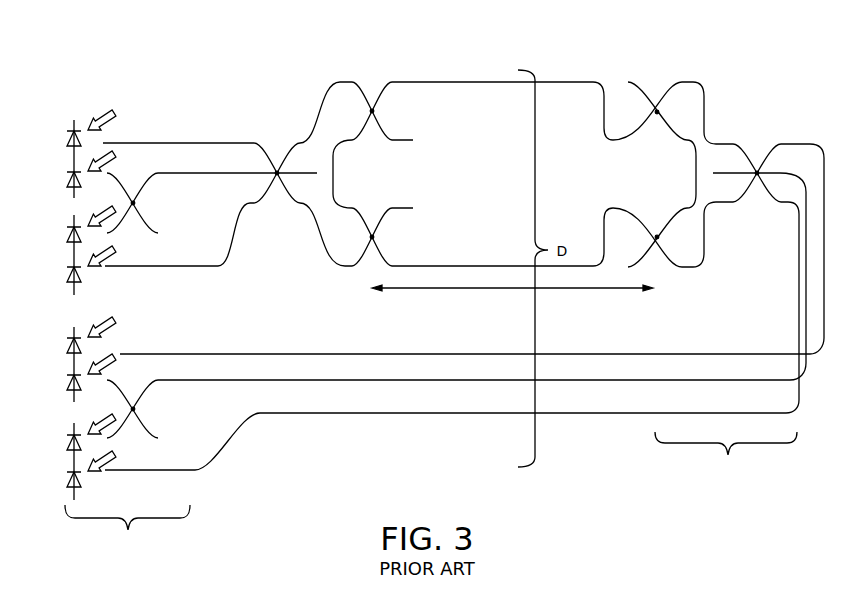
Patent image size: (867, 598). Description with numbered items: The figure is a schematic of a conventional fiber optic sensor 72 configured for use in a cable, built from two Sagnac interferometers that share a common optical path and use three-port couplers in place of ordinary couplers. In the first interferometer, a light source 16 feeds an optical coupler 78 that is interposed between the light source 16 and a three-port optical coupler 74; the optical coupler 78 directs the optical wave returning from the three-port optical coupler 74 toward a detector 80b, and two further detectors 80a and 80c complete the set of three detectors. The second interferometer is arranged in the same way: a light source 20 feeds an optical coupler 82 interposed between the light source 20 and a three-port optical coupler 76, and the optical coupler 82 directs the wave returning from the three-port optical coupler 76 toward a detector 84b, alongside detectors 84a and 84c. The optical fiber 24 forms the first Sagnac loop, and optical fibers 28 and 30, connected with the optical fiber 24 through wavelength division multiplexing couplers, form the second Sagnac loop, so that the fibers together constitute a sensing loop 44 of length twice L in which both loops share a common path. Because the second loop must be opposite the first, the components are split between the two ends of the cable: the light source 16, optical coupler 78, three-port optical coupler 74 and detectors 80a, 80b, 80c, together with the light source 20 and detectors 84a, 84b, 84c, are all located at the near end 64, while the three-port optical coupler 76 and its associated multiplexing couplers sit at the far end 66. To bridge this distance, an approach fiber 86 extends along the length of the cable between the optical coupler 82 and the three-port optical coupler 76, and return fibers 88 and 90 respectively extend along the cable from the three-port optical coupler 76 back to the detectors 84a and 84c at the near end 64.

The fiber optic sensor 72 is at (220, 70).
The detector 80a is at (68, 141).
The light source 16 is at (68, 182).
The detector 80b is at (68, 237).
The detector 80c is at (68, 277).
The detector 84a is at (68, 348).
The light source 20 is at (68, 385).
The detector 84b is at (68, 445).
The detector 84c is at (68, 482).
The optical coupler 78 is at (135, 200).
The 3-port optical coupler 74 is at (275, 168).
The optical fiber 24 is at (342, 80).
The optical fiber 28 is at (705, 105).
The optical fiber 30 is at (705, 235).
The 3-port optical coupler 76 is at (759, 170).
The optical coupler 82 is at (136, 406).
The return fiber 88 is at (378, 352).
The approach fiber 86 is at (428, 379).
The return fiber 90 is at (413, 415).
The sensing loop 44 is at (467, 289).
The near end 64 is at (127, 532).
The far end 66 is at (726, 455).